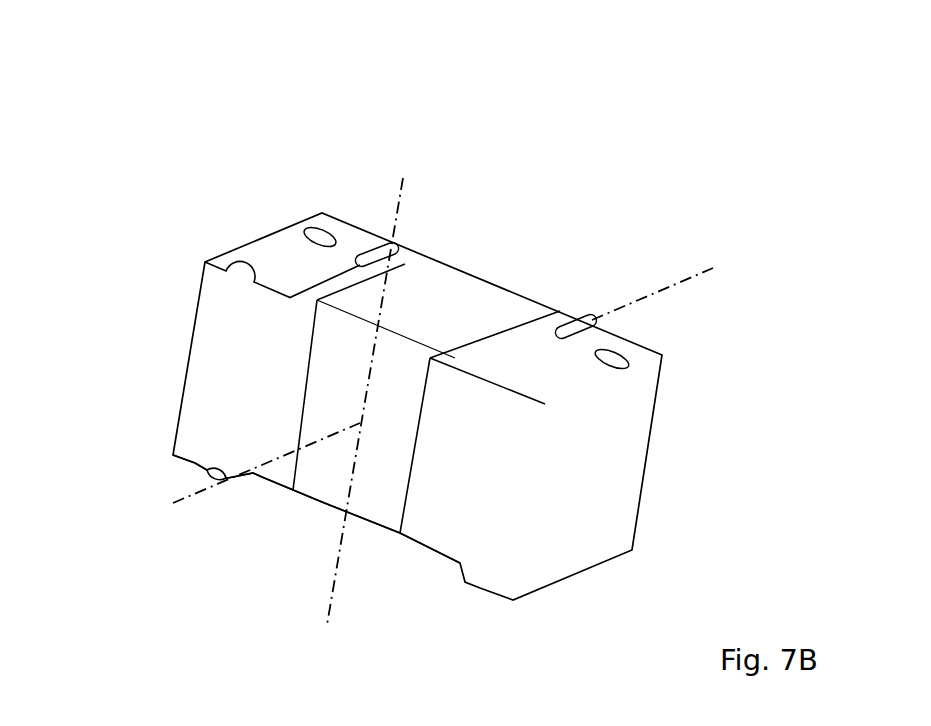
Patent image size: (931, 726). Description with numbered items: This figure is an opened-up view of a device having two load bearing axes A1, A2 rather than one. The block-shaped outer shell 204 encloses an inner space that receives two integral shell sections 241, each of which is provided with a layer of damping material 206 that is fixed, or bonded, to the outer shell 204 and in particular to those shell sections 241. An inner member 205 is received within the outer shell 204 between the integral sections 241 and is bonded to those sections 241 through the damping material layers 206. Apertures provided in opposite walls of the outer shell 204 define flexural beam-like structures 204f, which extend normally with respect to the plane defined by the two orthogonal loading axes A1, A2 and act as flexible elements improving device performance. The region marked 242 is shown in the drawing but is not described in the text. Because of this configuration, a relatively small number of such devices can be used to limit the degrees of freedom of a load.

The outer shell 204 is at (272, 248).
The beam-like structure 204f is at (382, 268).
The inner member 205 is at (320, 478).
The damping material layer 206 is at (300, 410).
The integral shell section 241 is at (357, 262).
The recess 242 is at (403, 302).
The load bearing axis A1 is at (365, 411).
The load bearing axis A2 is at (425, 386).